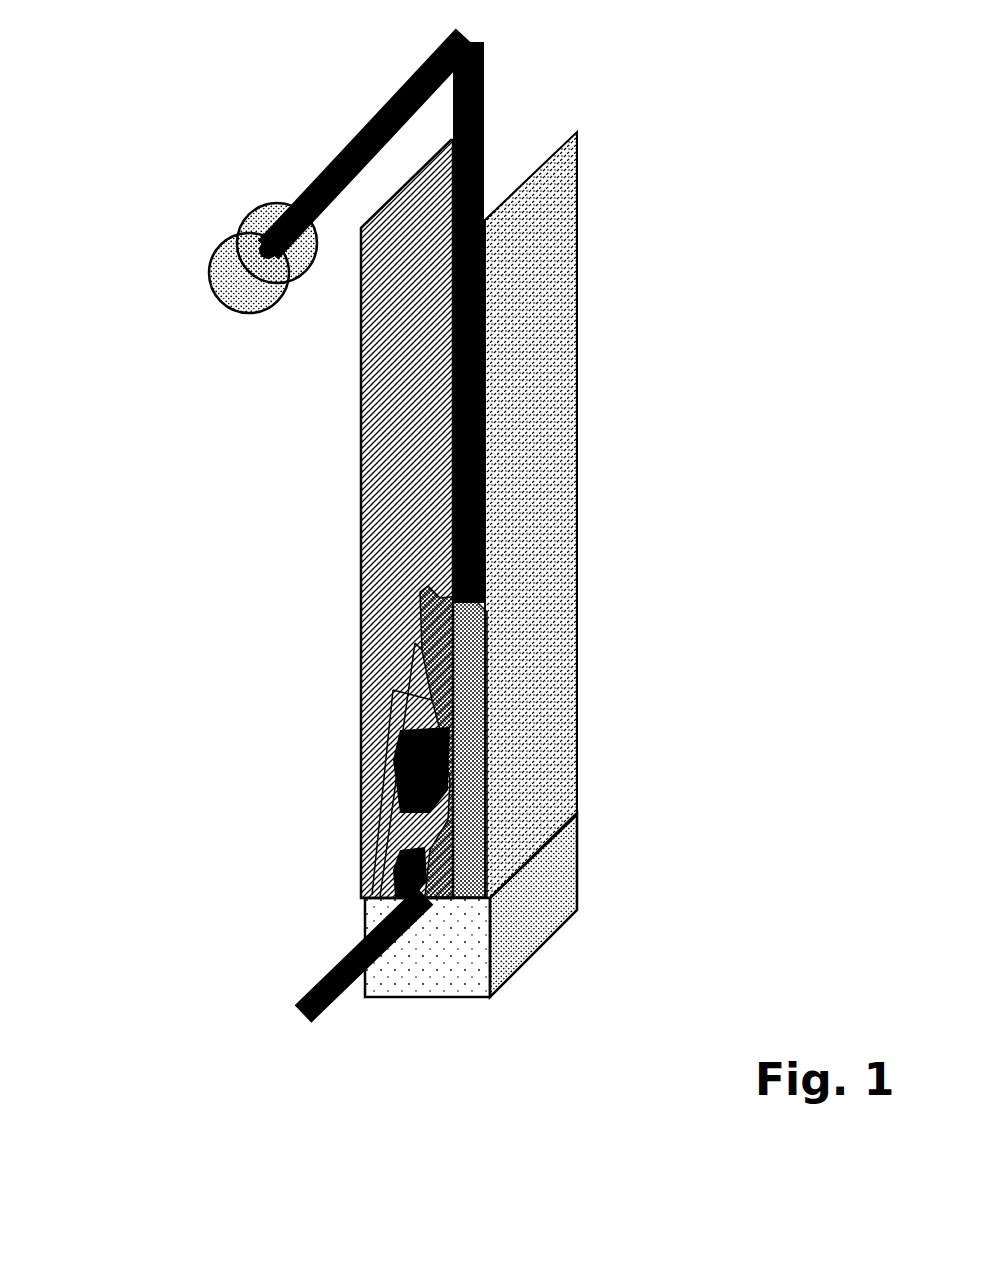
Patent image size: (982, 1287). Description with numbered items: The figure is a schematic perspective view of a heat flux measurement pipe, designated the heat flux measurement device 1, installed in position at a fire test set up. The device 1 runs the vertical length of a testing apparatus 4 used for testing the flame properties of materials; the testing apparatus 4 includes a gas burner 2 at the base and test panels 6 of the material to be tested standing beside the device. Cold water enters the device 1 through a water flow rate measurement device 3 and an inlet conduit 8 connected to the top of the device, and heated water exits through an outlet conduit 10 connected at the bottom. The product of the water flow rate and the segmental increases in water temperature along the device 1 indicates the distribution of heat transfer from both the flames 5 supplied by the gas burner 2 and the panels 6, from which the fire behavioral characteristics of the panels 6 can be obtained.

The heat flux measurement device 1 is at (447, 337).
The gas burner 2 is at (543, 918).
The water flow rate measurement device 3 is at (210, 287).
The testing apparatus 4 is at (669, 596).
The flames 5 is at (373, 757).
The test panels 6 is at (533, 475).
The inlet conduit 8 is at (340, 150).
The outlet conduit 10 is at (273, 1020).